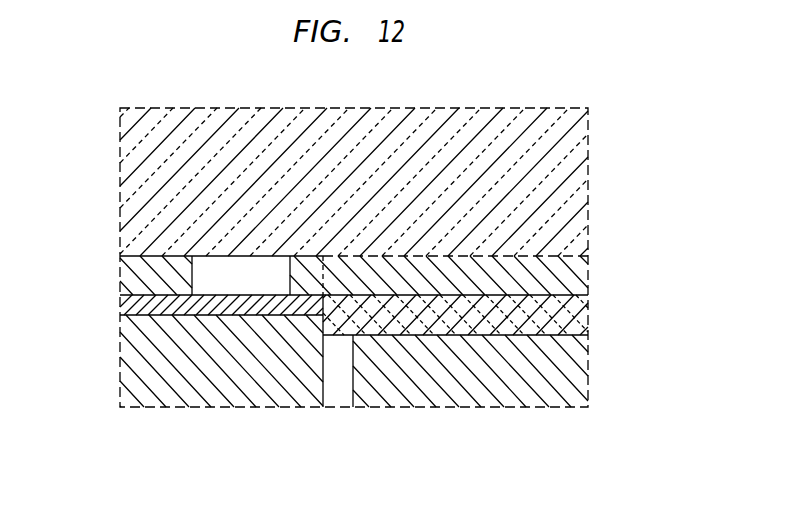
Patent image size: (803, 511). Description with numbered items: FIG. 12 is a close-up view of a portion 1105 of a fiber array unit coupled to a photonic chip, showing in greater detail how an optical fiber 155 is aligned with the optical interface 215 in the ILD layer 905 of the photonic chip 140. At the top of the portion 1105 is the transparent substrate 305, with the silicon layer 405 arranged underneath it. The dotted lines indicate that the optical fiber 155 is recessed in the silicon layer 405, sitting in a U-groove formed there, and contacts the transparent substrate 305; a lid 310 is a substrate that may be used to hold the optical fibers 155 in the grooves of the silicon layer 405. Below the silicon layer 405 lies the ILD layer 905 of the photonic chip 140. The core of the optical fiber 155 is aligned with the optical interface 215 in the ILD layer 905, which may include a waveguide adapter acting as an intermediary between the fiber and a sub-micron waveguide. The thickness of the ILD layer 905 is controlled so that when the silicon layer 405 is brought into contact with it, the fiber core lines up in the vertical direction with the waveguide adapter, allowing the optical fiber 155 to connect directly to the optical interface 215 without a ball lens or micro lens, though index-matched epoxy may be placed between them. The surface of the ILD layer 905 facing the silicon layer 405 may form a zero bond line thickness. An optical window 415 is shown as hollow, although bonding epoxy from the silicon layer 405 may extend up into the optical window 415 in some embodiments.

The portion 1105 is at (630, 108).
The transparent substrate 305 is at (567, 175).
The silicon layer 405 is at (112, 256).
The optical window 415 is at (220, 277).
The ILD layer 905 is at (114, 295).
The optical fiber 155 is at (586, 318).
The photonic chip 140 is at (129, 370).
The lid 310 is at (503, 392).
The optical interface 215 is at (313, 305).